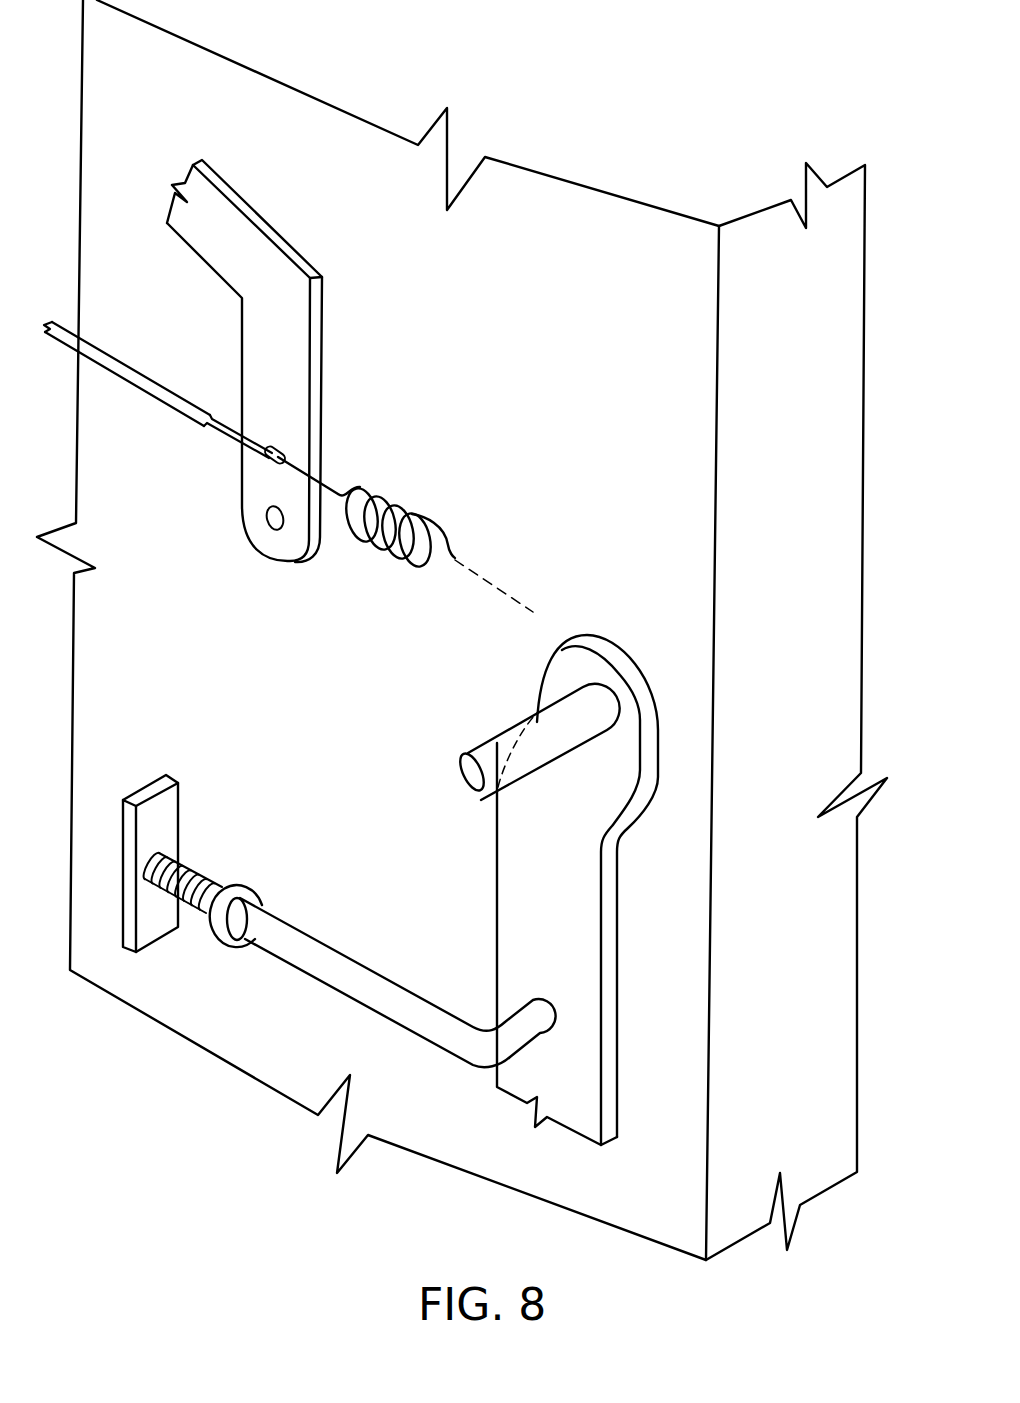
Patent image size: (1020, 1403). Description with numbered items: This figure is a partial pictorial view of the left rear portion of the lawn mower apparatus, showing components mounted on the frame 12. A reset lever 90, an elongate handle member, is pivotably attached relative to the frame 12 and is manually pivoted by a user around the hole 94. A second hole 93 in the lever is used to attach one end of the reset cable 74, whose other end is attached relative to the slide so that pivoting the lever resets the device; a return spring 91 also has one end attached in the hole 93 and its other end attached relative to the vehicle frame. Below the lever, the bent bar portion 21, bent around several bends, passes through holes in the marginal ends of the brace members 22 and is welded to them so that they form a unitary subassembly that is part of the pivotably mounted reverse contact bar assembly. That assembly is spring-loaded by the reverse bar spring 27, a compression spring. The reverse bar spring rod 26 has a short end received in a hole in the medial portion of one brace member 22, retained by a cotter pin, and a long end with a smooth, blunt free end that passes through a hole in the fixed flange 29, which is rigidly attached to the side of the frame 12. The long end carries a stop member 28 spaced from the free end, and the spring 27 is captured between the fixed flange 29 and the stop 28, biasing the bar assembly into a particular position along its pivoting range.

The frame 12 is at (791, 566).
The bent bar portion 21 is at (498, 743).
The brace members 22 is at (537, 893).
The reverse bar spring rod 26 is at (330, 977).
The reverse bar spring 27 is at (205, 872).
The stop member 28 is at (222, 933).
The fixed flange 29 is at (160, 783).
The reset cable 74 is at (137, 372).
The reset lever 90 is at (291, 371).
The return spring 91 is at (385, 566).
The second hole 93 is at (270, 463).
The hole 94 is at (268, 512).